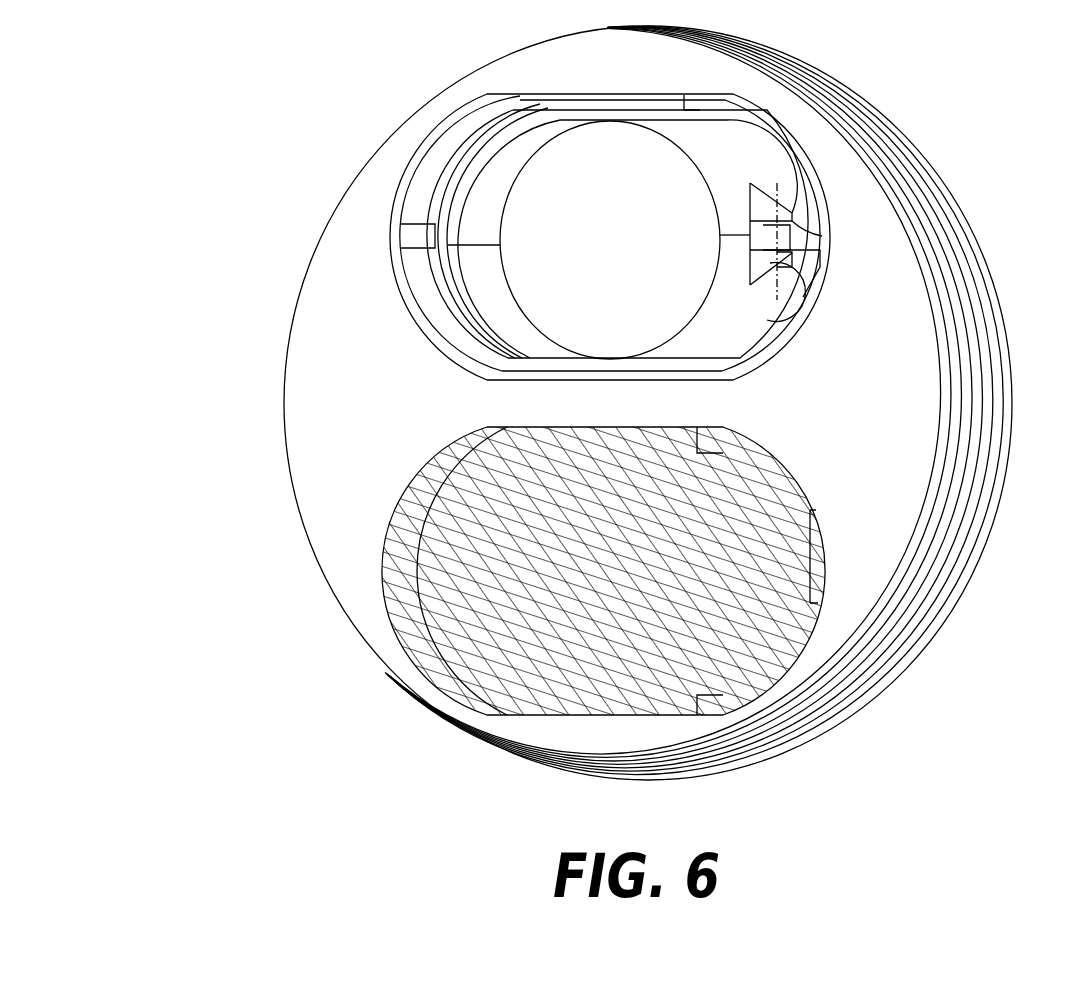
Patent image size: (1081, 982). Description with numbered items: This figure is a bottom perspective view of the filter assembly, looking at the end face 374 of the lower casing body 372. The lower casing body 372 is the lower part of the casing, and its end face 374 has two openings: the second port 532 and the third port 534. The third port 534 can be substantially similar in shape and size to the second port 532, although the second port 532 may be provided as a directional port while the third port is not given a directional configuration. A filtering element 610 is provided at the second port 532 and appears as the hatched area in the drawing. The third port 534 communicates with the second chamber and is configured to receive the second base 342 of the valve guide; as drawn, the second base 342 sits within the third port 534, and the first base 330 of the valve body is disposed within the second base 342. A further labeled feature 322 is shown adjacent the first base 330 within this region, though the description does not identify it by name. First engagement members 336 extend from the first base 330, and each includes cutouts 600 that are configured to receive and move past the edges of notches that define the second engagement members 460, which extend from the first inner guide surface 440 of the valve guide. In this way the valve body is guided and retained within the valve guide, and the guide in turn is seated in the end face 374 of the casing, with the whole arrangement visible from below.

The lens frame 322 is at (717, 340).
The first base 330 is at (498, 180).
The first engagement members 336 is at (770, 264).
The second base 342 is at (427, 332).
The lower casing body 372 is at (932, 312).
The end face 374 is at (300, 433).
The first inner guide surface 440 is at (417, 283).
The second engagement members 460 is at (403, 233).
The second port 532 is at (392, 630).
The third port 534 is at (453, 110).
The cutouts 600 is at (827, 236).
The filtering element 610 is at (783, 655).